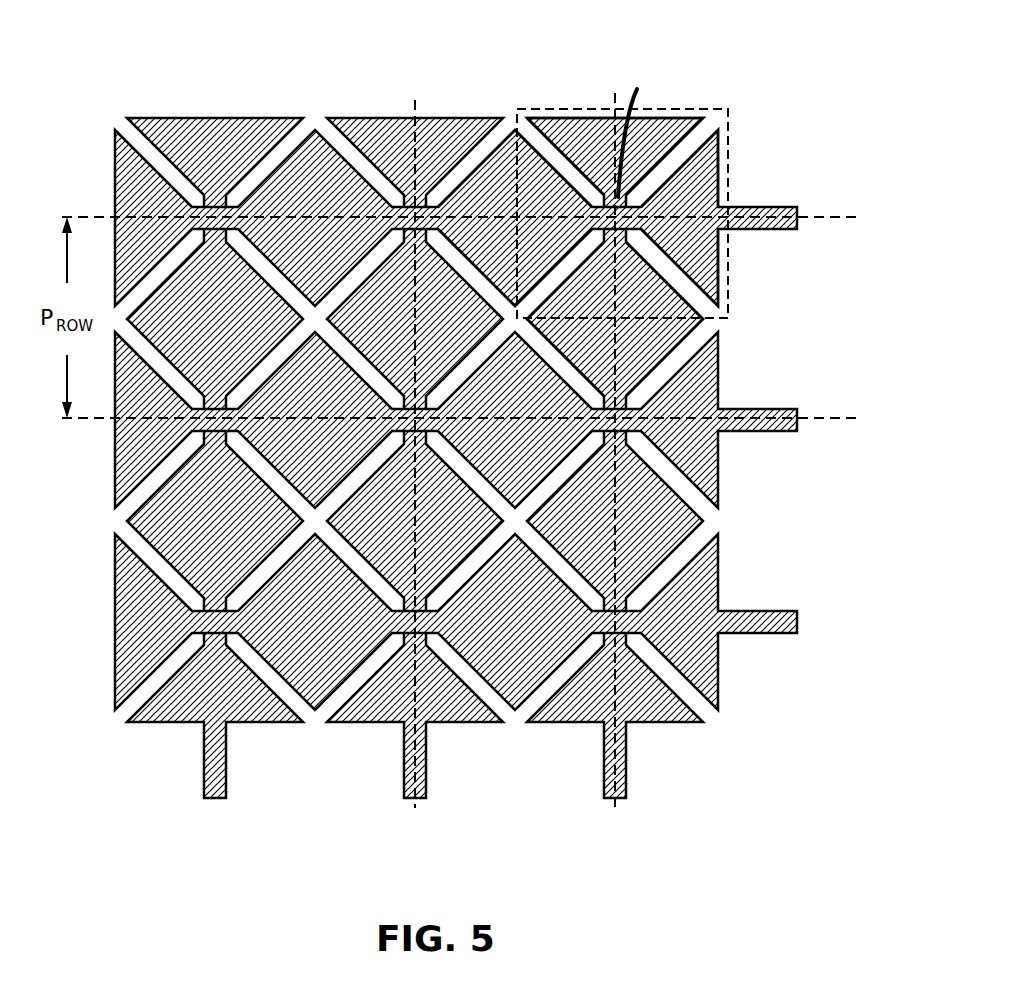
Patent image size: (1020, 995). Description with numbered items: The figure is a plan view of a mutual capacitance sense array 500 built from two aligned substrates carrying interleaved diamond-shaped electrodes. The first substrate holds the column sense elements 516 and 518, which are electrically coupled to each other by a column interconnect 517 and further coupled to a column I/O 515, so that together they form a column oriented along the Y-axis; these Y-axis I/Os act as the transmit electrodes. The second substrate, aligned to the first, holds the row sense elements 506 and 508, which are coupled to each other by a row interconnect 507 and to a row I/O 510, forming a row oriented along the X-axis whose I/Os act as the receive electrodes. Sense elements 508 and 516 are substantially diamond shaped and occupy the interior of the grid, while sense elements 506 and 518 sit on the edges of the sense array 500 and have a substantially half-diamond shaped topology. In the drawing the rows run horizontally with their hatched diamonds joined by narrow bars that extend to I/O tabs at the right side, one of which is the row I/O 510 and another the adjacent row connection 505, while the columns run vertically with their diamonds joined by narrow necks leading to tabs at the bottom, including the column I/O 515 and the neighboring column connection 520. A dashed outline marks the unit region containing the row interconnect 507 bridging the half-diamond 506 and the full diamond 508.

The mutual capacitance sense array 500 is at (448, 443).
The row electrode (second row) 505 is at (797, 407).
The row sense element 506 is at (679, 218).
The row interconnect 507 is at (730, 276).
The row sense element 508 is at (515, 218).
The row I/O 510 is at (797, 206).
The column I/O 515 is at (618, 800).
The column sense element 516 is at (615, 319).
The column interconnect 517 is at (620, 192).
The column sense element 518 is at (615, 156).
The column electrode (second column) 520 is at (412, 800).